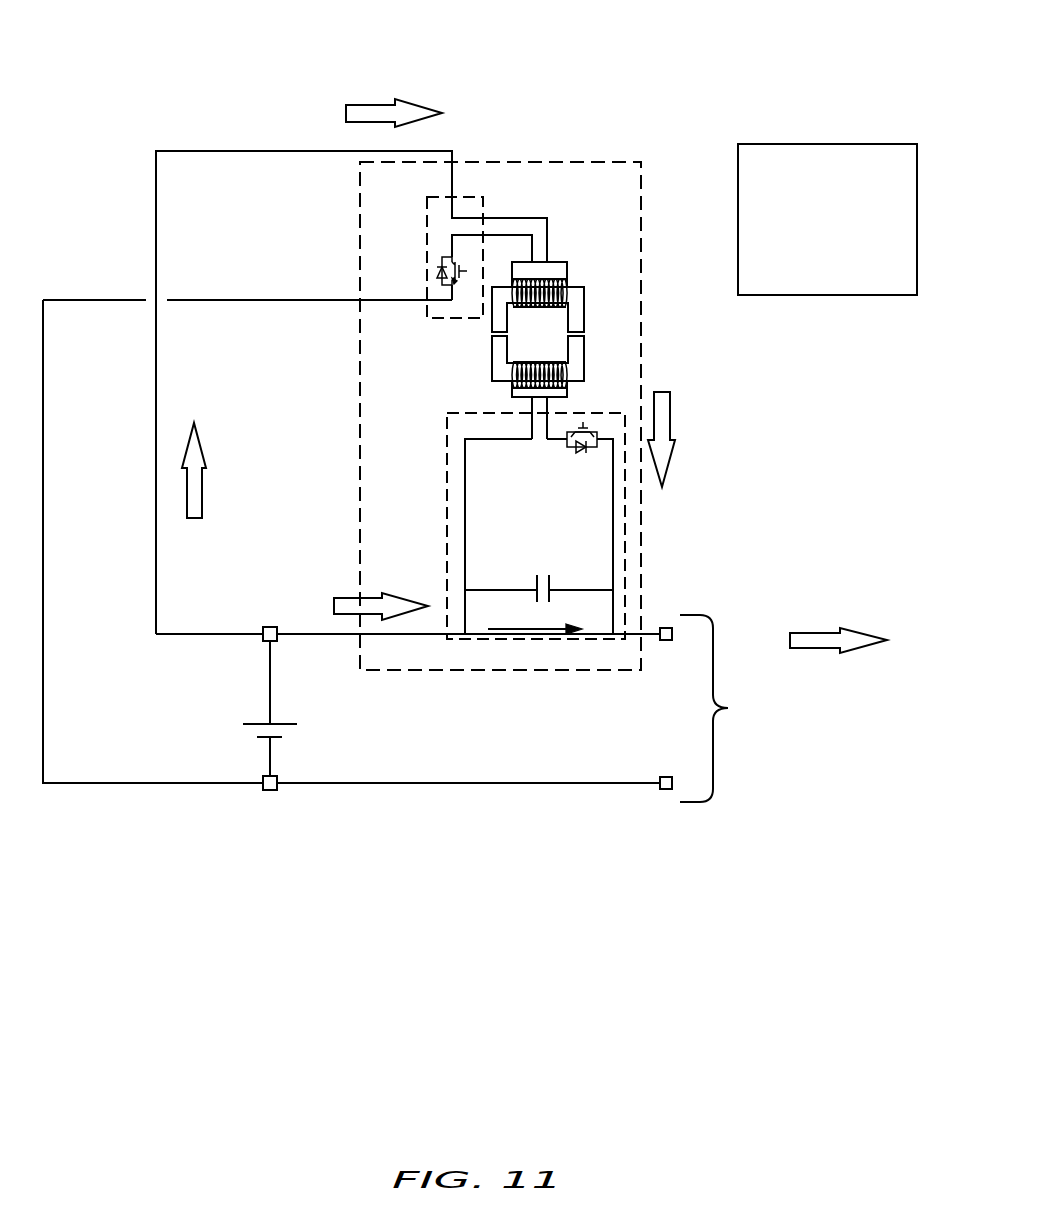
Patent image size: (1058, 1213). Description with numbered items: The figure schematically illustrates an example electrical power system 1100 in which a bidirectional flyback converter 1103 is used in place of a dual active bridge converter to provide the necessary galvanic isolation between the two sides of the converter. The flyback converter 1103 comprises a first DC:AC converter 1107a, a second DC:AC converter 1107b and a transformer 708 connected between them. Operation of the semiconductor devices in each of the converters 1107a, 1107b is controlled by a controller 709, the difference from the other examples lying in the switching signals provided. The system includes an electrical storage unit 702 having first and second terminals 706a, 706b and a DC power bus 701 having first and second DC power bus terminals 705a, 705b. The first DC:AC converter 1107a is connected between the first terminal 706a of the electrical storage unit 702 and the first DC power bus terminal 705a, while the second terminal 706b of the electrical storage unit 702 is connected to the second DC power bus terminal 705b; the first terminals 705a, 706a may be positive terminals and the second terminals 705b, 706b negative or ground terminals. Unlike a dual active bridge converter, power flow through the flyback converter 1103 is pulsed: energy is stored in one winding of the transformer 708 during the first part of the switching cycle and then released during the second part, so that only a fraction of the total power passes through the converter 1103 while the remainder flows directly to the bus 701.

The electrical power system 1100 is at (192, 68).
The bidirectional flyback converter 1103 is at (641, 327).
The first DC:AC converter 1107a is at (447, 453).
The second DC:AC converter 1107b is at (483, 204).
The transformer 708 is at (500, 325).
The controller 709 is at (849, 232).
The electrical storage unit 702 is at (285, 726).
The first terminal of the electrical storage unit 706a is at (262, 639).
The second terminal of the electrical storage unit 706b is at (266, 775).
The first DC power bus terminal 705a is at (666, 641).
The second DC power bus terminal 705b is at (666, 790).
The DC power bus 701 is at (733, 708).